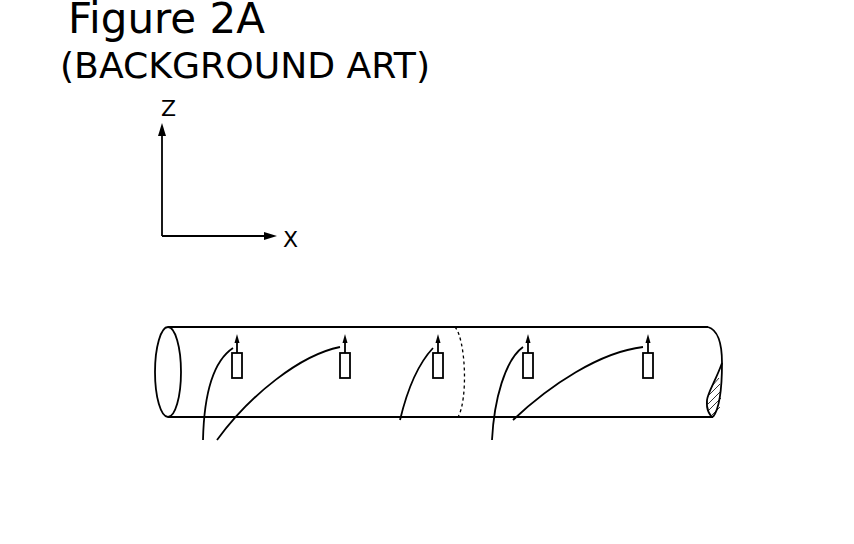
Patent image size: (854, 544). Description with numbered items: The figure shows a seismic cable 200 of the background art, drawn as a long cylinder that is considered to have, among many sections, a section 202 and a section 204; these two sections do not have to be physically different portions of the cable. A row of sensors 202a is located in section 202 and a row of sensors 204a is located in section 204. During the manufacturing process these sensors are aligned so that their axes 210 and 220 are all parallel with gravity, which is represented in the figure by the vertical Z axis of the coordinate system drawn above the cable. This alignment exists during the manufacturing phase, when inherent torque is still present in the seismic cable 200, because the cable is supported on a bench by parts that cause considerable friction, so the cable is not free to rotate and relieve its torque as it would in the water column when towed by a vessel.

The seismic cable 200 is at (460, 189).
The section 202 is at (317, 392).
The section 204 is at (619, 392).
The sensors 202a is at (243, 363).
The sensors 204a is at (533, 363).
The axis 210 is at (217, 440).
The axis 220 is at (513, 420).